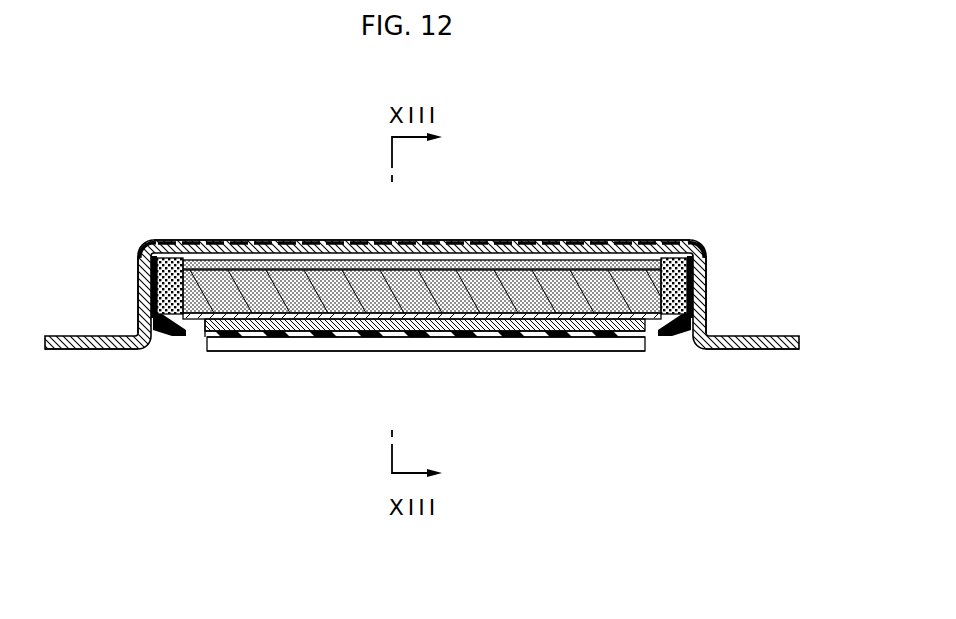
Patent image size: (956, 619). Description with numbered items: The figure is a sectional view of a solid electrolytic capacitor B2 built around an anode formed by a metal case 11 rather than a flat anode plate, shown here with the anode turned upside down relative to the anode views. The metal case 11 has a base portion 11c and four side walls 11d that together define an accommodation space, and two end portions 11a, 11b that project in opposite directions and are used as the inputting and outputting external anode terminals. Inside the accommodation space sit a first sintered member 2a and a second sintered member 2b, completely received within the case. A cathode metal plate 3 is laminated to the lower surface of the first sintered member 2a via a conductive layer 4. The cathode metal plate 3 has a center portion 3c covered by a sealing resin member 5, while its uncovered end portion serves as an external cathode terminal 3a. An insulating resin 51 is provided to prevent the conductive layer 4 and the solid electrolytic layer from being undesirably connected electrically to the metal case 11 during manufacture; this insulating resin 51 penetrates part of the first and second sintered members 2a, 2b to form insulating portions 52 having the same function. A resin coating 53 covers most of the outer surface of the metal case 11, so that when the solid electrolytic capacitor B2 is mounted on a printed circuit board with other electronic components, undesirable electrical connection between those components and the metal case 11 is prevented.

The solid electrolytic capacitor B2 is at (108, 170).
The metal case 11 is at (507, 253).
The end portion 11a is at (95, 348).
The end portion 11b is at (753, 349).
The base portion 11c is at (407, 243).
The side walls 11d is at (140, 290).
The resin coating 53 is at (563, 243).
The insulating portions 52 is at (175, 262).
The insulating resin 51 is at (165, 338).
The sealing resin member 5 is at (196, 335).
The second sintered member 2b is at (320, 265).
The first sintered member 2a is at (278, 325).
The conductive layer 4 is at (583, 335).
The cathode metal plate 3 is at (359, 338).
The center portion 3c is at (443, 337).
The external cathode terminal 3a is at (525, 351).